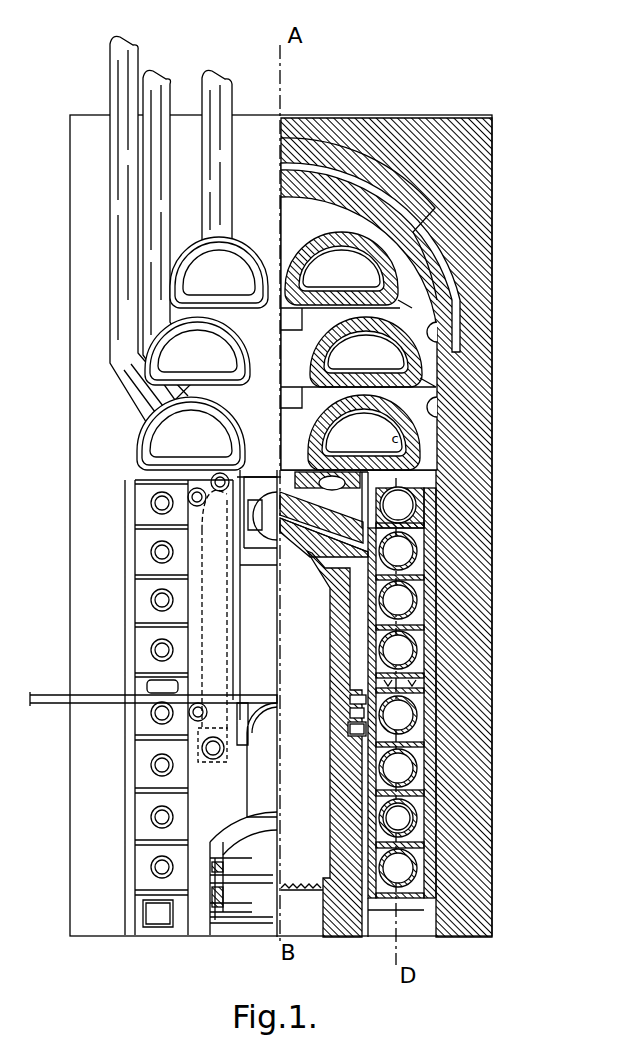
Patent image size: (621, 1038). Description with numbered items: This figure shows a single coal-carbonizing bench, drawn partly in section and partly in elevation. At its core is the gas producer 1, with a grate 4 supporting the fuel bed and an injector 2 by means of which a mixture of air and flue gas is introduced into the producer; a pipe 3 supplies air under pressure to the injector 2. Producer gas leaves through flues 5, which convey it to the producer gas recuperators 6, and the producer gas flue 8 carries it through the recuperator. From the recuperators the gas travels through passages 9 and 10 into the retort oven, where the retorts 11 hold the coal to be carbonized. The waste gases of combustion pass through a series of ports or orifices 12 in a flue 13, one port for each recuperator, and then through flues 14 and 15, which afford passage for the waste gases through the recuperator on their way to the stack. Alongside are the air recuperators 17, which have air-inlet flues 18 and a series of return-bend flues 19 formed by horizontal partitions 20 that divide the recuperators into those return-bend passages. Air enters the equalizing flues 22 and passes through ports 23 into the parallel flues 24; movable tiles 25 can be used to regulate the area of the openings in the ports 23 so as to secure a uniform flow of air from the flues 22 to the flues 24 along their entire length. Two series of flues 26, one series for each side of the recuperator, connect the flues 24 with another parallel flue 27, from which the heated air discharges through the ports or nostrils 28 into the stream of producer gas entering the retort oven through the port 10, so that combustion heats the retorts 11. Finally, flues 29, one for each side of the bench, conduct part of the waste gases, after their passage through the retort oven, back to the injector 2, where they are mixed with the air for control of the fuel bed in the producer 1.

The gas producer 1 is at (370, 798).
The injector 2 is at (243, 819).
The pipe 3 is at (100, 695).
The grate 4 is at (302, 879).
The flues 5 is at (324, 545).
The producer gas recuperators 6 is at (430, 627).
The producer gas flue 8 is at (418, 538).
The passage 9 is at (321, 517).
The passage 10 is at (271, 510).
The retorts 11 is at (279, 351).
The ports 12 is at (383, 490).
The flue 13 is at (400, 507).
The flue 14 is at (398, 659).
The flue 15 is at (398, 818).
The air recuperators 17 is at (430, 767).
The air-inlet flues 18 is at (279, 916).
The return-bend flues 19 is at (417, 819).
The horizontal partitions 20 is at (370, 842).
The equalizing flues 22 is at (357, 730).
The ports 23 is at (350, 726).
The parallel flues 24 is at (350, 703).
The movable tiles 25 is at (352, 712).
The flues 26 is at (340, 537).
The parallel flue 27 is at (332, 483).
The ports or nostrils 28 is at (327, 482).
The flues 29 is at (215, 621).